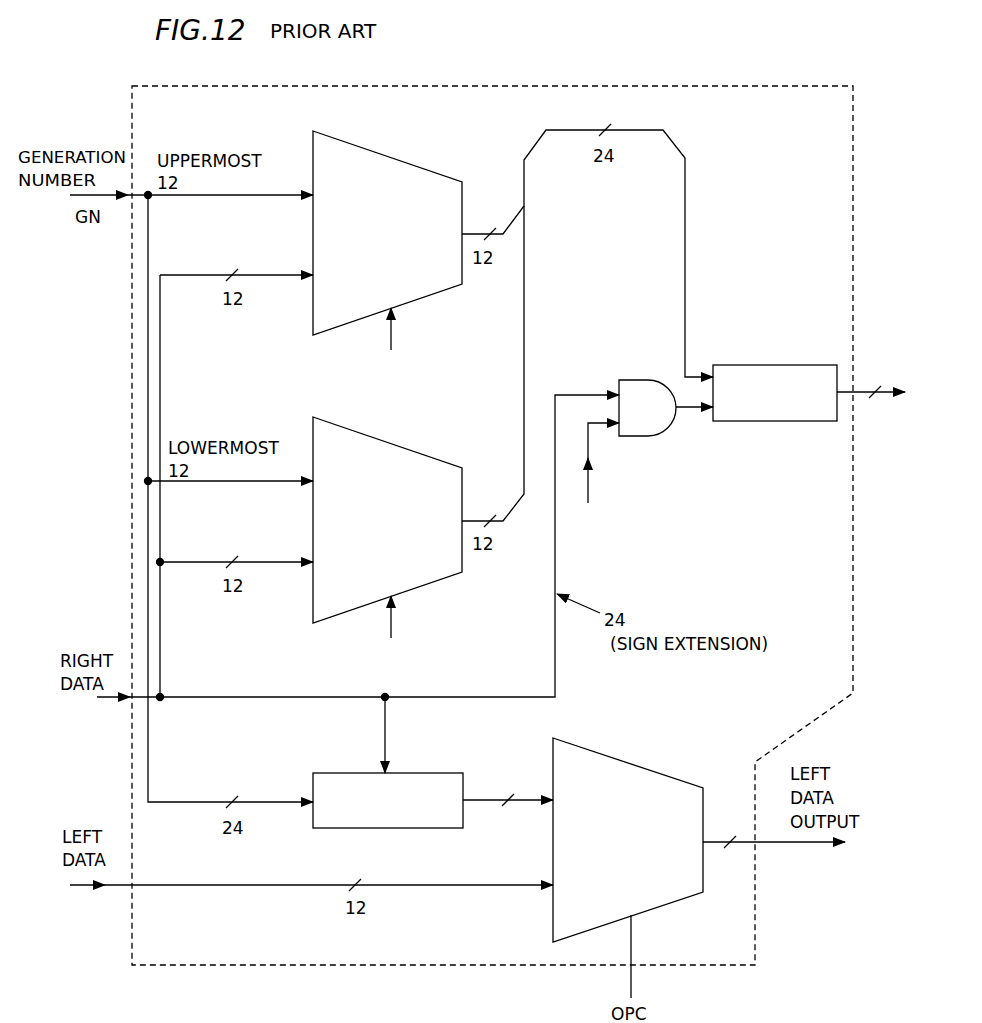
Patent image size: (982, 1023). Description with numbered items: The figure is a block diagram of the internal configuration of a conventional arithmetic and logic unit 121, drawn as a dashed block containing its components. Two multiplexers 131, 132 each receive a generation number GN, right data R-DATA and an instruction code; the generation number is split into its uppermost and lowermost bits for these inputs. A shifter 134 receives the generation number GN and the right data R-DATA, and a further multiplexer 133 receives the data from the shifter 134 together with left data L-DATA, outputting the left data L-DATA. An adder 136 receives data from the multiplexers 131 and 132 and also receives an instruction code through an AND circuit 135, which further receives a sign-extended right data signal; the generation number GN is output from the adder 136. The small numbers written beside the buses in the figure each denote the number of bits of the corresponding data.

The arithmetic and logic unit 121 is at (740, 965).
The multiplexer 131 is at (410, 163).
The multiplexer 132 is at (410, 449).
The multiplexer 133 is at (651, 770).
The shifter 134 is at (436, 773).
The AND circuit 135 is at (632, 380).
The adder 136 is at (765, 365).